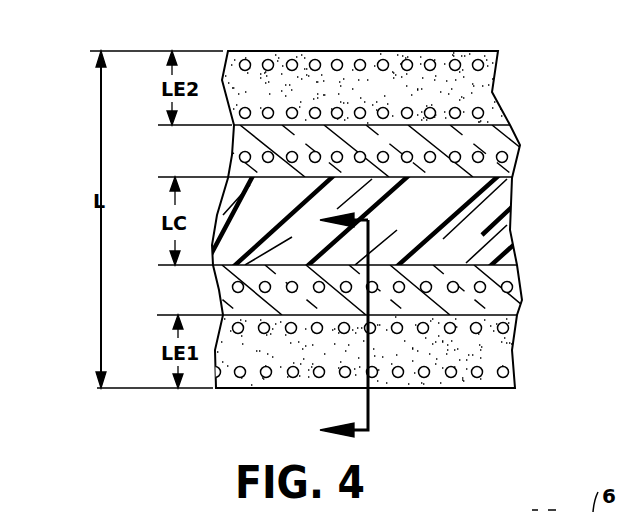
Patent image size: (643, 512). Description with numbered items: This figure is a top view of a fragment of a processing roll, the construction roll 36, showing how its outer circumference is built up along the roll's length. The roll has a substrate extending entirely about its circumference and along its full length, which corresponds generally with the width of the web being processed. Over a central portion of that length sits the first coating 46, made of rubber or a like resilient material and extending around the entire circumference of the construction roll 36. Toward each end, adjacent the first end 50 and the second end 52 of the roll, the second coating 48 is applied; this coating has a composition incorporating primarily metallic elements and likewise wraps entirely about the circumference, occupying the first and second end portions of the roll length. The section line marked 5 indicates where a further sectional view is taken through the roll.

The construction roll 36 is at (509, 116).
The first coating 46 is at (512, 212).
The second coating 48 is at (418, 80).
The first end 50 is at (255, 390).
The second end 52 is at (285, 52).
The section line 5- 5 is at (334, 328).